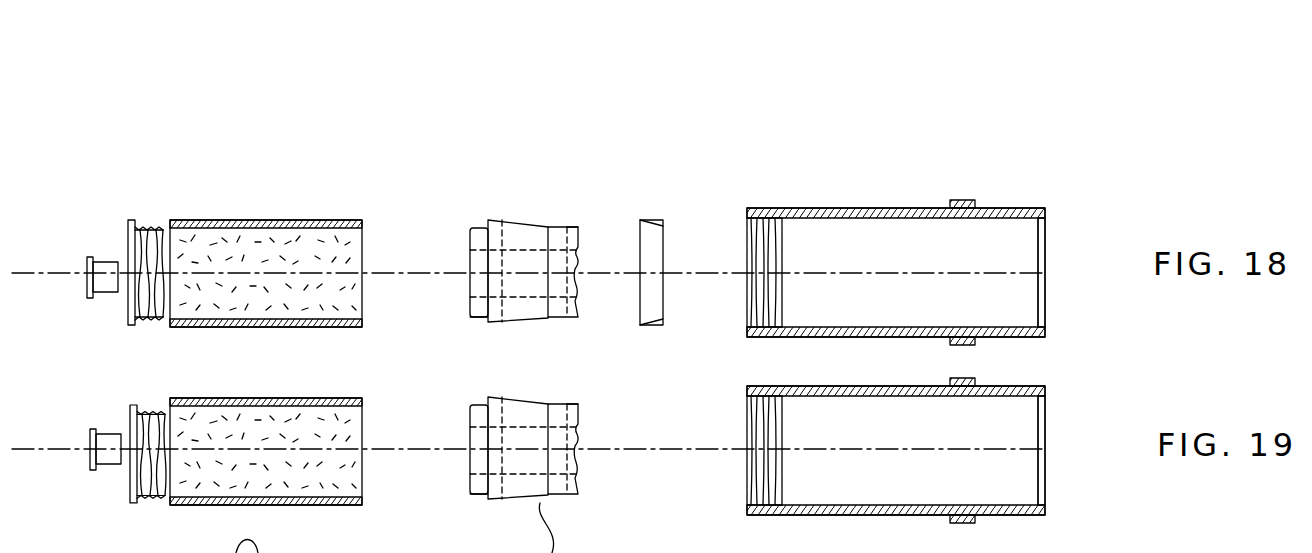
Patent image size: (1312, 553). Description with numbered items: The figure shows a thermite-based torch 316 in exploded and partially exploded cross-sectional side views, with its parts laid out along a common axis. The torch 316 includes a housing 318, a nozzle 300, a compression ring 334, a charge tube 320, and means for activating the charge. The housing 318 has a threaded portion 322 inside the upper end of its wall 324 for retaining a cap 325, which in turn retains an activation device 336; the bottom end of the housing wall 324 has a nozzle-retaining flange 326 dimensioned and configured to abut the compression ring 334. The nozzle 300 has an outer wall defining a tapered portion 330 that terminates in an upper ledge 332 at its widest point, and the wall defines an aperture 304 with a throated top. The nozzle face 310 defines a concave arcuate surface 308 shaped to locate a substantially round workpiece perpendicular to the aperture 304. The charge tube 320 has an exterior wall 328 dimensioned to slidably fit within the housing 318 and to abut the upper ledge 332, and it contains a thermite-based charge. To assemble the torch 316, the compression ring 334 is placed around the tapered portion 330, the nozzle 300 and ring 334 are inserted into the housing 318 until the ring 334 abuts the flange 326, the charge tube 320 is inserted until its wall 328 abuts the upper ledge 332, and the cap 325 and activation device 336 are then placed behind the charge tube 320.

In FIG. 18, the nozzle 300 is at (521, 227).
In FIG. 19, the nozzle 300 is at (700, 448).
In FIG. 18, the aperture 304 is at (478, 265).
In FIG. 19, the aperture 304 is at (478, 445).
In FIG. 18, the concave arcuate surface 308 is at (583, 255).
In FIG. 19, the concave arcuate surface 308 is at (575, 470).
In FIG. 18, the nozzle face 310 is at (603, 305).
In FIG. 19, the nozzle face 310 is at (577, 415).
In FIG. 18, the thermite-based torch 316 is at (875, 185).
In FIG. 18, the housing 318 is at (928, 185).
In FIG. 19, the housing 318 is at (958, 432).
In FIG. 18, the charge tube 320 is at (236, 202).
In FIG. 19, the charge tube 320 is at (462, 467).
In FIG. 18, the threaded portion 322 is at (748, 222).
In FIG. 19, the threaded portion 322 is at (770, 427).
In FIG. 18, the housing wall 324 is at (877, 207).
In FIG. 19, the housing wall 324 is at (870, 387).
In FIG. 18, the cap 325 is at (142, 228).
In FIG. 19, the cap 325 is at (131, 503).
In FIG. 18, the nozzle-retaining flange 326 is at (1040, 228).
In FIG. 19, the nozzle-retaining flange 326 is at (1040, 412).
In FIG. 18, the exterior wall 328 is at (332, 218).
In FIG. 19, the exterior wall 328 is at (266, 451).
In FIG. 18, the tapered portion 330 is at (530, 322).
In FIG. 19, the tapered portion 330 is at (512, 400).
In FIG. 18, the upper ledge 332 is at (480, 325).
In FIG. 19, the upper ledge 332 is at (485, 400).
In FIG. 18, the compression ring 334 is at (663, 158).
In FIG. 18, the activation device 336 is at (110, 262).
In FIG. 19, the activation device 336 is at (138, 385).